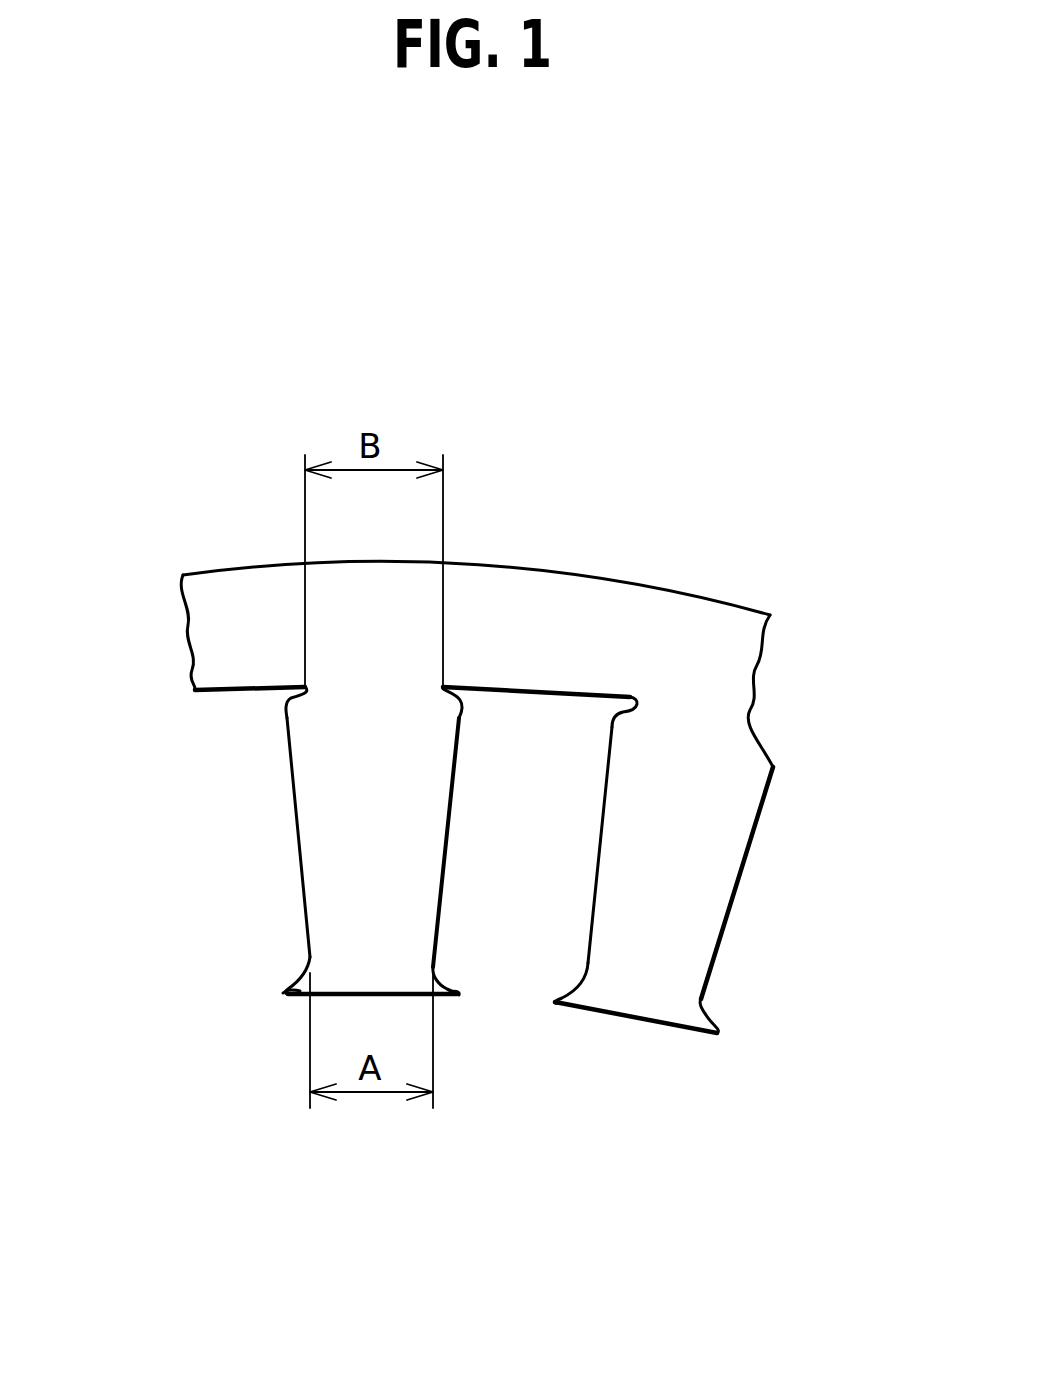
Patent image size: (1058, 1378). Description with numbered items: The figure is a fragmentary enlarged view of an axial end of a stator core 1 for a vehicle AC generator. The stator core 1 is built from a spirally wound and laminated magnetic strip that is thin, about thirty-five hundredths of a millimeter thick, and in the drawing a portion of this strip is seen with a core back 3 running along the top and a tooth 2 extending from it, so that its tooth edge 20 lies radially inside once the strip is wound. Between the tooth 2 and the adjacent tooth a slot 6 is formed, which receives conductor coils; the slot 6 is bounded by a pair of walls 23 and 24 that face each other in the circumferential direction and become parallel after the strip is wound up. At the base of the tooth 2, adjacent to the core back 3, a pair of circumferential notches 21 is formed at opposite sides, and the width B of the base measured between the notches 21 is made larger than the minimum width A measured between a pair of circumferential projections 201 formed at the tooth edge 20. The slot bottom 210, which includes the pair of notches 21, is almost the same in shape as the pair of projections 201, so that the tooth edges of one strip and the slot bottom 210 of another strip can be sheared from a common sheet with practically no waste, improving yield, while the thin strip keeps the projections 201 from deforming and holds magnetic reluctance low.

The stator core 1 is at (785, 585).
The tooth 2 is at (279, 949).
The core back 3 is at (477, 620).
The slot 6 is at (529, 948).
The tooth edge 20 is at (353, 980).
The circumferential notch 21 is at (300, 684).
The slot wall 23 is at (447, 845).
The slot wall 24 is at (597, 867).
The circumferential projection 201 is at (300, 990).
The slot bottom 210 is at (545, 688).